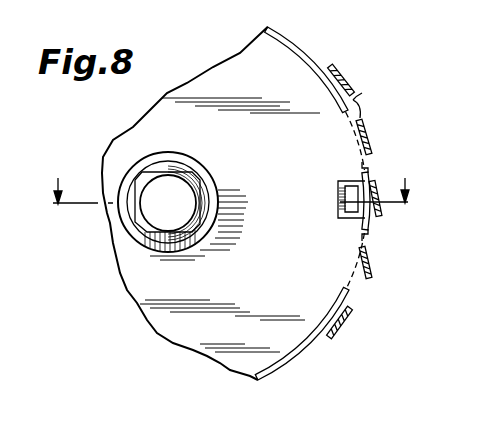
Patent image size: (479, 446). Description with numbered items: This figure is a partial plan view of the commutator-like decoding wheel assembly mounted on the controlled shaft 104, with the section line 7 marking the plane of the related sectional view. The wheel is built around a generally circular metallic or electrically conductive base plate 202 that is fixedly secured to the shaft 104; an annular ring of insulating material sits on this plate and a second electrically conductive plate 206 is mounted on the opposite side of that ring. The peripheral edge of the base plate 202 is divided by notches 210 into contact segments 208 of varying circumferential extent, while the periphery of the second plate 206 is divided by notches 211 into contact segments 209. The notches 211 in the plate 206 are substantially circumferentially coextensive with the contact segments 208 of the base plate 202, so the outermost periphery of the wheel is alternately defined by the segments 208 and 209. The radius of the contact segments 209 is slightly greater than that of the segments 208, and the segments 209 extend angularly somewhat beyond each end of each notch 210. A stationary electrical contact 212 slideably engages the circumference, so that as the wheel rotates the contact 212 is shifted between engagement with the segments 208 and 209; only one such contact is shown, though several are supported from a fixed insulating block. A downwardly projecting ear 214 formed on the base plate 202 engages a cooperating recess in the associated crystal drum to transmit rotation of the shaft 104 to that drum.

The section line 7- 7 is at (230, 190).
The controlled shaft 104 is at (161, 172).
The base plate 202 is at (247, 138).
The second plate 206 is at (372, 233).
The contact segments 208 is at (306, 50).
The contact segments 209 is at (365, 164).
The notches 210 is at (315, 77).
The notches 211 is at (352, 137).
The stationary electrical contact 212 is at (362, 93).
The downwardly projecting ear 214 is at (345, 195).